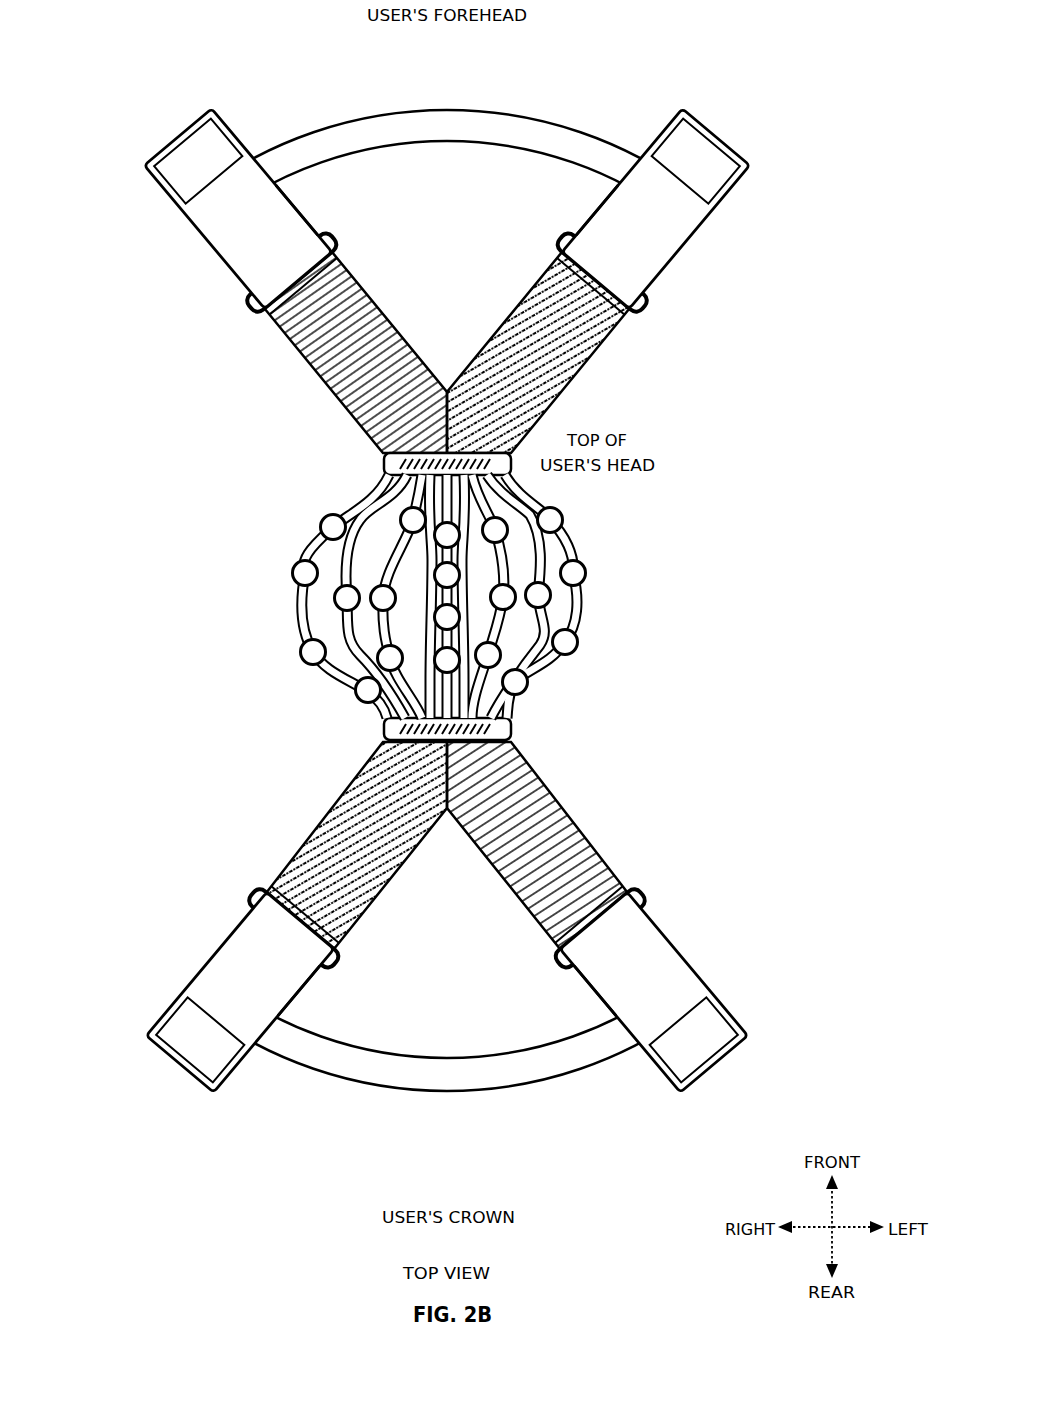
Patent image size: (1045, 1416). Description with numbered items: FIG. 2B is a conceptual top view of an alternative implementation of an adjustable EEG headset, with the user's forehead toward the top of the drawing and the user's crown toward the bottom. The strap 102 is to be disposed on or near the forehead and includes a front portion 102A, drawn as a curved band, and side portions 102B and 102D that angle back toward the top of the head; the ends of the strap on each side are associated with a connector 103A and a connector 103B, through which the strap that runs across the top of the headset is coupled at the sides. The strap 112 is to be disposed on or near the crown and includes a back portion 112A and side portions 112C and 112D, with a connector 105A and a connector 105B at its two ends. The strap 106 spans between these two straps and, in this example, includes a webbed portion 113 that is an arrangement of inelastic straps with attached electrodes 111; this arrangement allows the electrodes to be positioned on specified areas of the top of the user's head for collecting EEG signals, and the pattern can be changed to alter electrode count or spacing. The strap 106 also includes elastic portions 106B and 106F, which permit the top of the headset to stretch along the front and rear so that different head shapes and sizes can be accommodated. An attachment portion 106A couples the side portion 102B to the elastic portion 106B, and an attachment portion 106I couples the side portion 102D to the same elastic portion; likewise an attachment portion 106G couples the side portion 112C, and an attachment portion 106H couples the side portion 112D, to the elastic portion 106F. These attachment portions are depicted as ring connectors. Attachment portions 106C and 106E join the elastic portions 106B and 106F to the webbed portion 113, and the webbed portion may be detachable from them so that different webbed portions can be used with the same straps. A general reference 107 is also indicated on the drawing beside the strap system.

The strap 102 is at (178, 216).
The front portion 102A is at (434, 108).
The side portion 102B is at (298, 208).
The side portion 102D is at (596, 208).
The connector 103A is at (224, 179).
The connector 103B is at (671, 179).
The connector 105A is at (261, 1019).
The connector 105B is at (637, 1019).
The strap 106 is at (178, 576).
The attachment portion 106A is at (243, 315).
The elastic portion 106B is at (327, 389).
The attachment portion 106C is at (384, 466).
The attachment portion 106E is at (383, 718).
The elastic portion 106F is at (305, 843).
The attachment portion 106G is at (238, 900).
The attachment portion 106H is at (656, 903).
The attachment portion 106I is at (645, 303).
The head-mounted display strap system 107 is at (196, 457).
The electrodes 111 is at (303, 650).
The strap 112 is at (168, 971).
The back portion 112A is at (440, 1093).
The side portion 112C is at (320, 981).
The side portion 112D is at (574, 981).
The webbed portion 113 is at (448, 596).